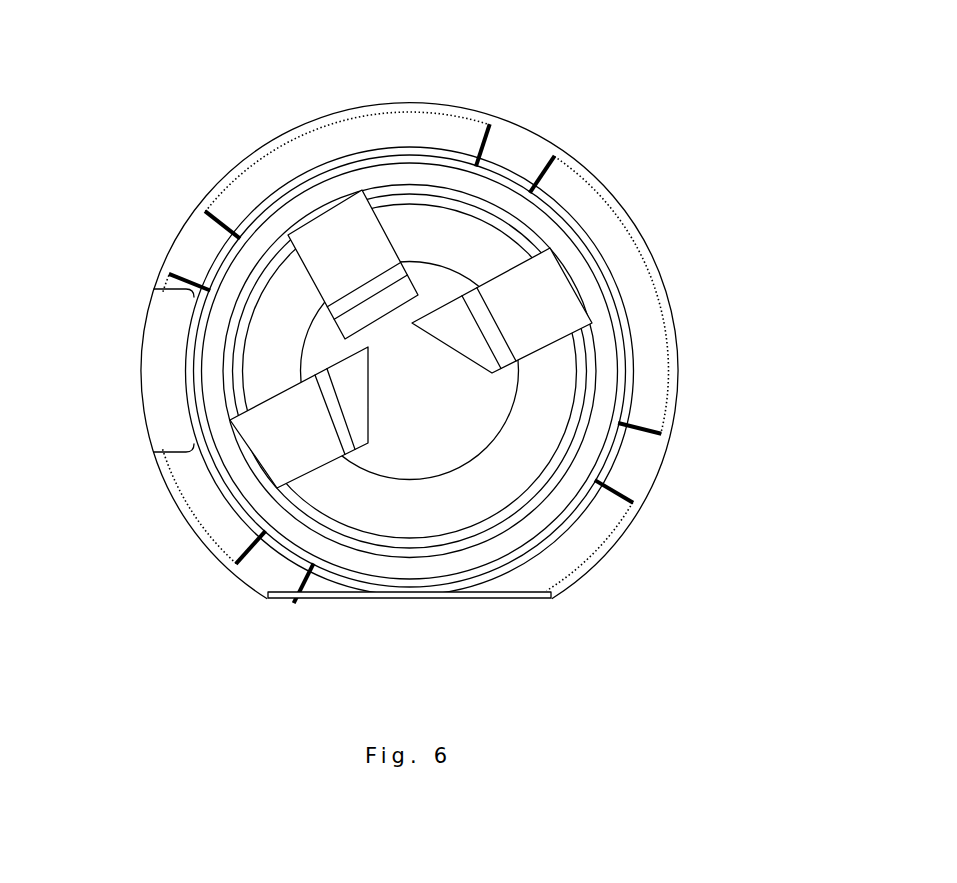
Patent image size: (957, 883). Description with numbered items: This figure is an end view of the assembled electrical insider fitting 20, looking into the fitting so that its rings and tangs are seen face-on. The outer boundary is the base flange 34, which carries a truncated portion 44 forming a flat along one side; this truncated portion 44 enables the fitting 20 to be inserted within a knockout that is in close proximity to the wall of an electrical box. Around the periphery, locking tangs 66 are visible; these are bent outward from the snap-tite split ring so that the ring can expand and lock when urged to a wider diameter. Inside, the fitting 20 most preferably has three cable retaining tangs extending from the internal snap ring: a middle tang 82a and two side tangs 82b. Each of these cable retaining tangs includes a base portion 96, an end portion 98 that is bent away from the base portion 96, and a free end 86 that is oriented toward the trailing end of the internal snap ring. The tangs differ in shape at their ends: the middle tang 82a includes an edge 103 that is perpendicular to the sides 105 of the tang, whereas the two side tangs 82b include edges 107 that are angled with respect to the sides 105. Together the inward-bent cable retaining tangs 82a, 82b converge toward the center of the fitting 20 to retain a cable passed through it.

The electrical insider fitting 20 is at (150, 135).
The base flange 34 is at (315, 117).
The truncated portion 44 is at (348, 600).
The locking tangs 66 is at (518, 152).
The middle tang 82a is at (357, 286).
The side tang 82b is at (411, 368).
The free end 86 is at (418, 297).
The base portion 96 is at (278, 412).
The end portion 98 is at (355, 402).
The edge 103 is at (377, 321).
The sides 105 is at (385, 230).
The edges 107 is at (462, 358).